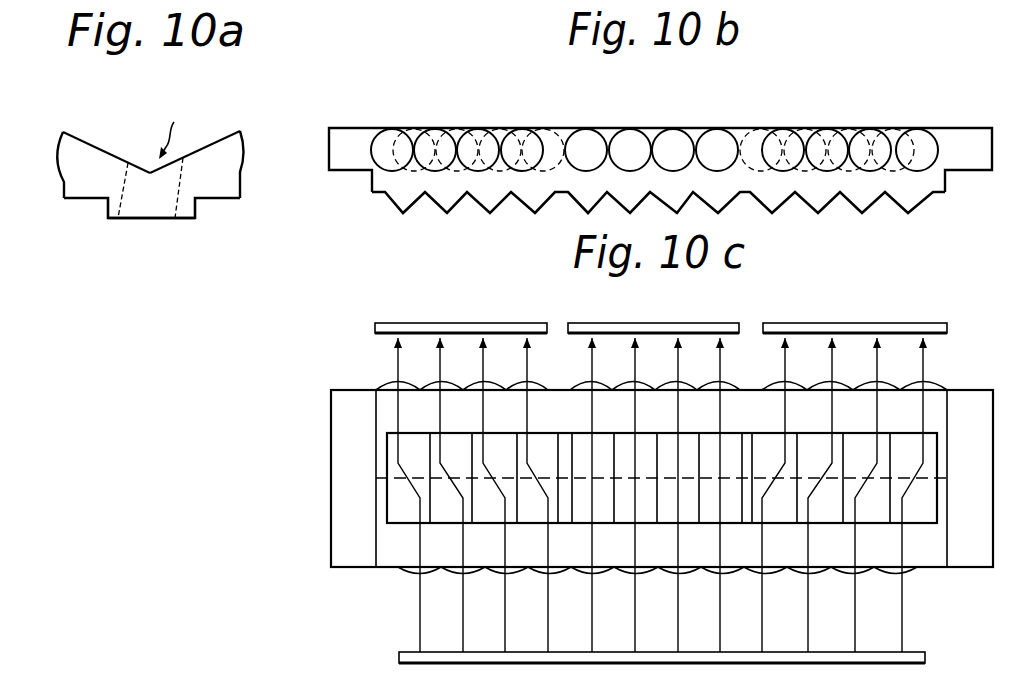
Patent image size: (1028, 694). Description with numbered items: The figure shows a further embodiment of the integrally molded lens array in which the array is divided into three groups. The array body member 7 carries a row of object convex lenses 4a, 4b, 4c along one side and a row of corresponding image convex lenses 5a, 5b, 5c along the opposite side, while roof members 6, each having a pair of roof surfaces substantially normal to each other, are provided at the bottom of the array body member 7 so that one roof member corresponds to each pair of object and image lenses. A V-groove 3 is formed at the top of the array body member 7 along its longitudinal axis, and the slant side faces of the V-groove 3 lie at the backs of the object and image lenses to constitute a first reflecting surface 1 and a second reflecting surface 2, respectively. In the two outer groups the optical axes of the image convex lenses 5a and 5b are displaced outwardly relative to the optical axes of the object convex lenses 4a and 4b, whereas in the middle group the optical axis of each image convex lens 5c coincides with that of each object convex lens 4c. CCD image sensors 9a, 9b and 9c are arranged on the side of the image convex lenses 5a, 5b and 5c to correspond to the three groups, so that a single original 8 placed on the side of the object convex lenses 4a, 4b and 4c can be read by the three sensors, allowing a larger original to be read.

In FIG. 10A, the first reflecting surface 1 is at (97, 147).
In FIG. 10A, the second reflecting surface 2 is at (207, 147).
In FIG. 10A, the V-groove 3 is at (174, 124).
In FIG. 10A, the object convex lens 4a is at (58, 142).
In FIG. 10B, the object convex lens 4a is at (895, 124).
In FIG. 10C, the object convex lens 4a is at (918, 572).
In FIG. 10B, the object convex lens 4b is at (422, 122).
In FIG. 10C, the object convex lens 4b is at (405, 573).
In FIG. 10C, the object convex lens 4c is at (668, 572).
In FIG. 10A, the image convex lens 5a is at (244, 138).
In FIG. 10B, the image convex lens 5a is at (937, 127).
In FIG. 10C, the image convex lens 5a is at (935, 388).
In FIG. 10B, the image convex lens 5b is at (389, 128).
In FIG. 10C, the image convex lens 5b is at (385, 388).
In FIG. 10B, the image convex lens 5c is at (718, 127).
In FIG. 10C, the image convex lens 5c is at (697, 378).
In FIG. 10A, the roof member 6 is at (133, 218).
In FIG. 10B, the roof member 6 is at (400, 203).
In FIG. 10C, the roof member 6 is at (938, 443).
In FIG. 10A, the array body member 7 is at (73, 182).
In FIG. 10B, the array body member 7 is at (348, 175).
In FIG. 10C, the array body member 7 is at (985, 492).
In FIG. 10C, the original 8 is at (923, 644).
In FIG. 10C, the CCD image sensor 9a is at (878, 322).
In FIG. 10C, the CCD image sensor 9b is at (416, 322).
In FIG. 10C, the CCD image sensor 9c is at (660, 322).